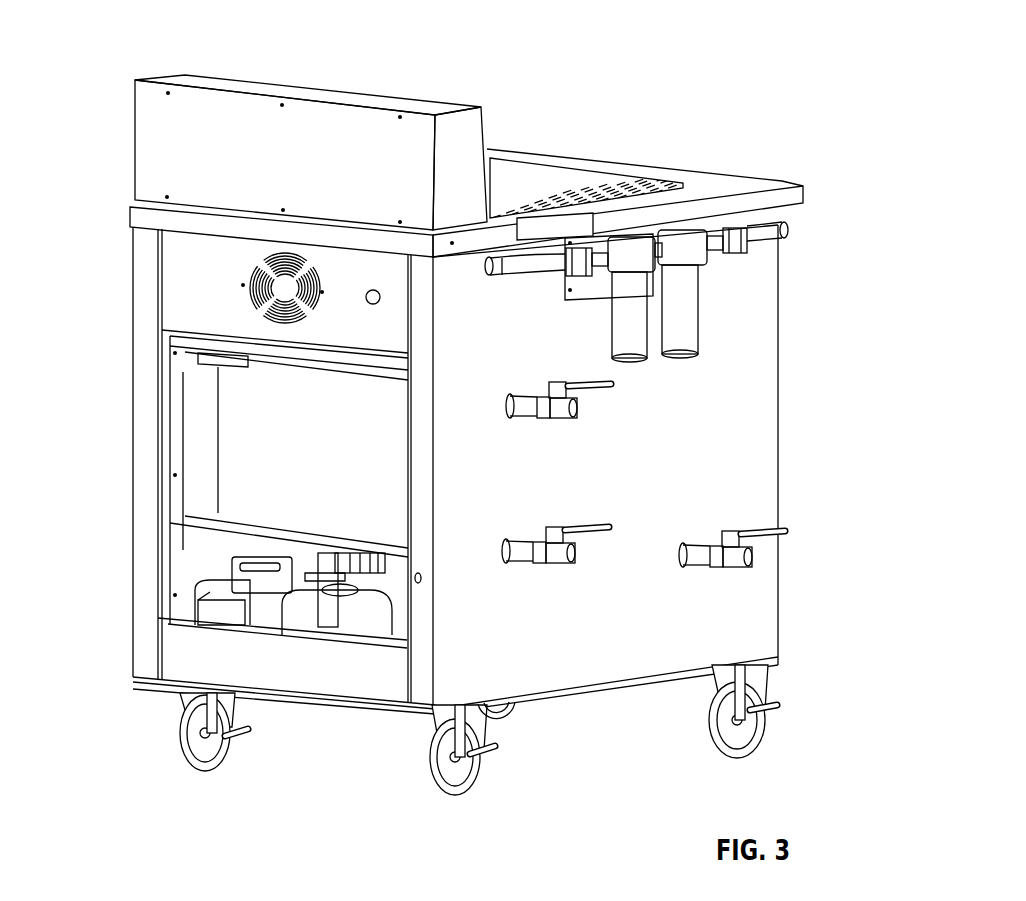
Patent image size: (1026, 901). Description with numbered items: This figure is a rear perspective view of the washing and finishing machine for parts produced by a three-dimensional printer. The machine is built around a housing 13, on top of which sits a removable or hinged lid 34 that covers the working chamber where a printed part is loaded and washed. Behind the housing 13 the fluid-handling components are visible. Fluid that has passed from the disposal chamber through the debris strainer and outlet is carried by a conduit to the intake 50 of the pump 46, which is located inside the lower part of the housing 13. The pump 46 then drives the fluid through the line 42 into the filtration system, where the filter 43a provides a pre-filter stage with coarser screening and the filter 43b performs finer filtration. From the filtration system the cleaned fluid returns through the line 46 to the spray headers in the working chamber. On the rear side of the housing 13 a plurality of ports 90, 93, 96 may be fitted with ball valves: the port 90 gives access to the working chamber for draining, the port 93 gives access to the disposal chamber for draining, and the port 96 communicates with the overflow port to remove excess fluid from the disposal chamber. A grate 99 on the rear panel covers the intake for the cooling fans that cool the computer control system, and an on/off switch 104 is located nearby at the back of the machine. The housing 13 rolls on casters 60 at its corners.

The housing 13 is at (755, 402).
The lid 34 is at (568, 183).
The line 42 is at (525, 270).
The filter 43a is at (640, 342).
The filter 43b is at (675, 323).
The pump 46 is at (763, 237).
The intake 50 is at (372, 560).
The caster wheel 60 is at (188, 743).
The port 90 is at (725, 560).
The port 93 is at (552, 557).
The port 96 is at (555, 412).
The grate 99 is at (258, 280).
The on/off switch 104 is at (372, 289).